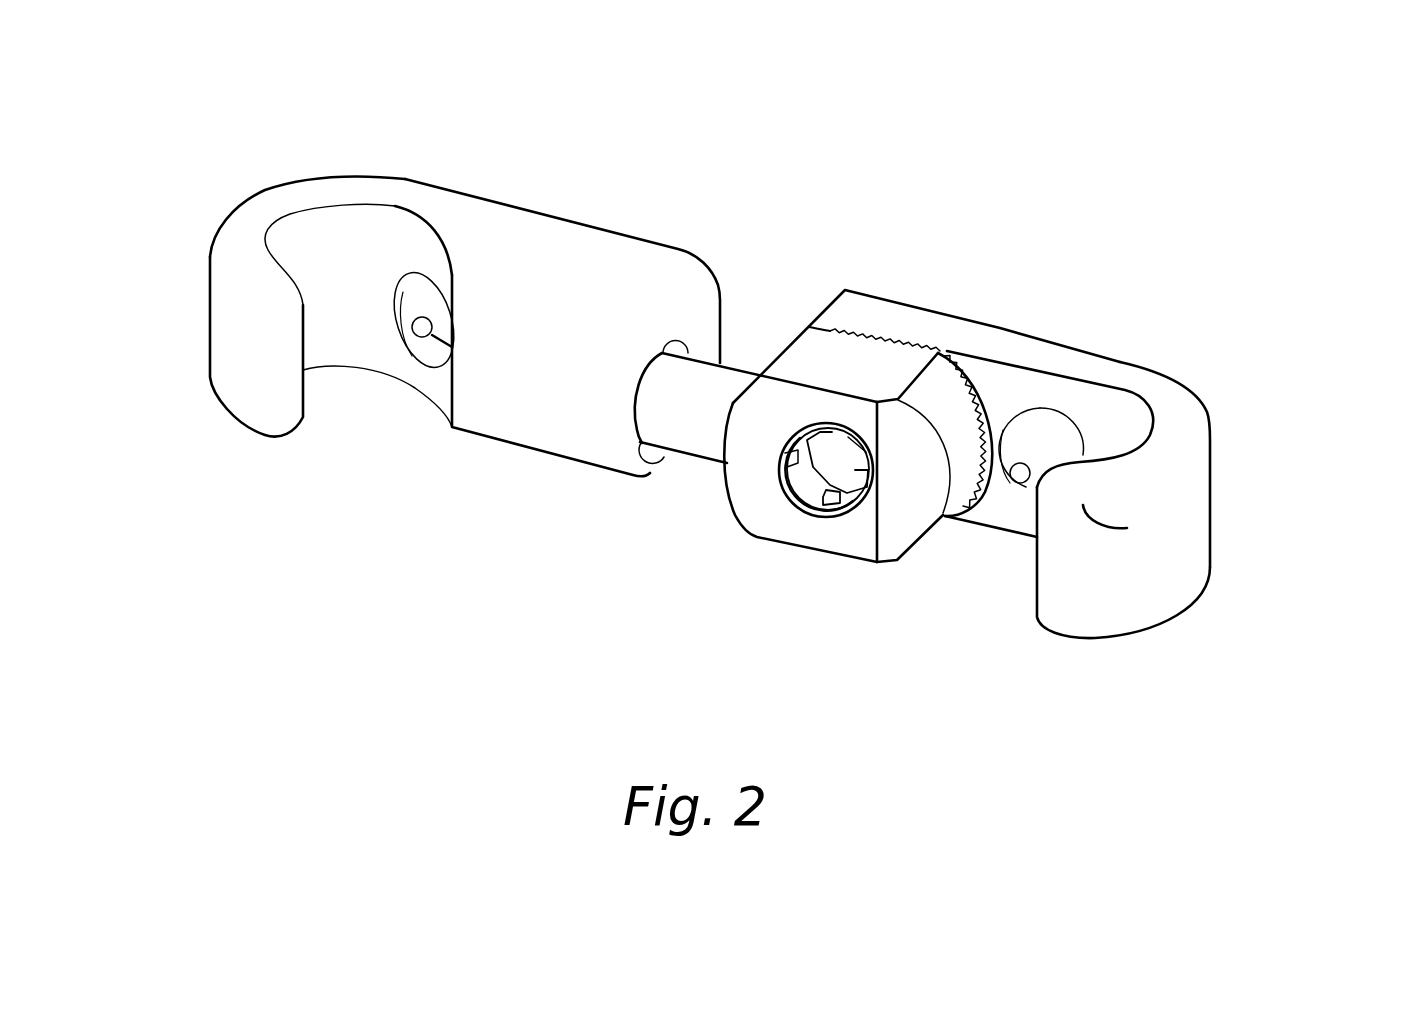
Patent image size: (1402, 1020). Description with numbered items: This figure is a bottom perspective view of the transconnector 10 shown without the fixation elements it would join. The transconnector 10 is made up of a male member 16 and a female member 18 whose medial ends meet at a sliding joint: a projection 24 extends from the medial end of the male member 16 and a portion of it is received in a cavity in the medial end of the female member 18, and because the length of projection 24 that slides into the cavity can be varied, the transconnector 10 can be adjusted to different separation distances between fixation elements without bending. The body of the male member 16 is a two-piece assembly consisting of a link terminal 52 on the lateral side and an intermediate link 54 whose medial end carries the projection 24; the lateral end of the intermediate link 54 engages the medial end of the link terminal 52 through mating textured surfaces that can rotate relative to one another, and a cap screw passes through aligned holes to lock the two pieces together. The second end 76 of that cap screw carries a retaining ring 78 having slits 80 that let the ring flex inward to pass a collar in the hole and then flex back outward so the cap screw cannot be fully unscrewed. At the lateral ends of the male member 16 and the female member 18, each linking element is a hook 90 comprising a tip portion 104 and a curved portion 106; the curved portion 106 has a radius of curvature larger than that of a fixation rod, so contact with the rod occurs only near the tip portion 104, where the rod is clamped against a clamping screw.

The transconnector 10 is at (973, 165).
The male member 16 is at (997, 327).
The female member 18 is at (522, 225).
The projection 24 is at (703, 447).
The link terminal 52 is at (1108, 353).
The intermediate link 54 is at (877, 563).
The second end 76 is at (810, 507).
The retaining ring 78 is at (790, 427).
The slits 80 is at (833, 517).
The hook 90 is at (219, 68).
The tip portion 104 is at (272, 292).
The curved portion 106 is at (296, 186).